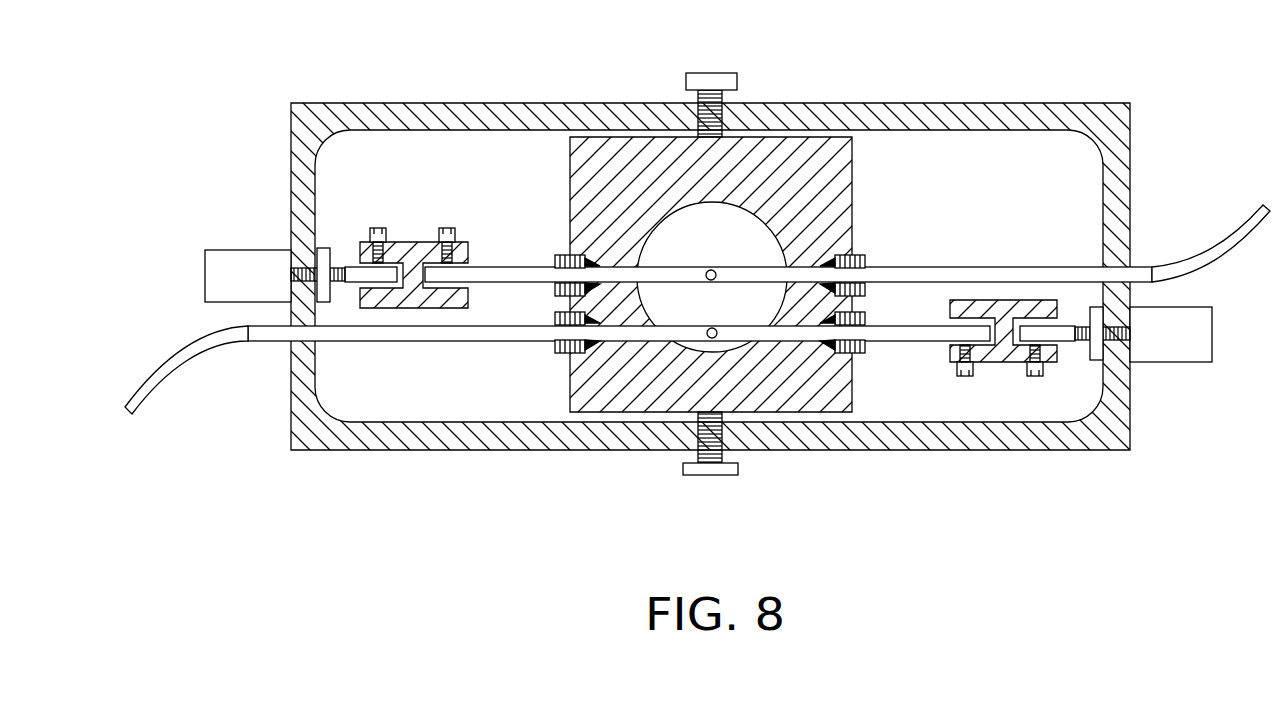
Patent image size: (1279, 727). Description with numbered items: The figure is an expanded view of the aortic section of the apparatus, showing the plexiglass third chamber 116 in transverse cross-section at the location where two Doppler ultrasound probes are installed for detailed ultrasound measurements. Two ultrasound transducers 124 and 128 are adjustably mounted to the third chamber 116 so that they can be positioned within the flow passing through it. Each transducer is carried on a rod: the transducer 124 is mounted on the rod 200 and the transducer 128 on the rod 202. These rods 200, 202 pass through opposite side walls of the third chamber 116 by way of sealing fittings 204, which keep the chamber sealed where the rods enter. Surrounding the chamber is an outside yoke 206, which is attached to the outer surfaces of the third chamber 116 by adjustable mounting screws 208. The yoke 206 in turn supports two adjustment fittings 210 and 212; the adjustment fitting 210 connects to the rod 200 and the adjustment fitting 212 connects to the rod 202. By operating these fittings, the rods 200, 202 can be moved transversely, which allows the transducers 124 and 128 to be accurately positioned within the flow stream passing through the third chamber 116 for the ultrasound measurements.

The third chamber 116 is at (853, 138).
The ultrasound transducer 124 is at (714, 270).
The ultrasound transducer 128 is at (715, 339).
The rod 200 is at (1036, 266).
The rod 202 is at (443, 342).
The sealing fitting 204 is at (862, 258).
The outside yoke 206 is at (998, 103).
The adjustable mounting screw 208 is at (712, 81).
The adjustment fitting 210 is at (230, 258).
The adjustment fitting 212 is at (1197, 357).